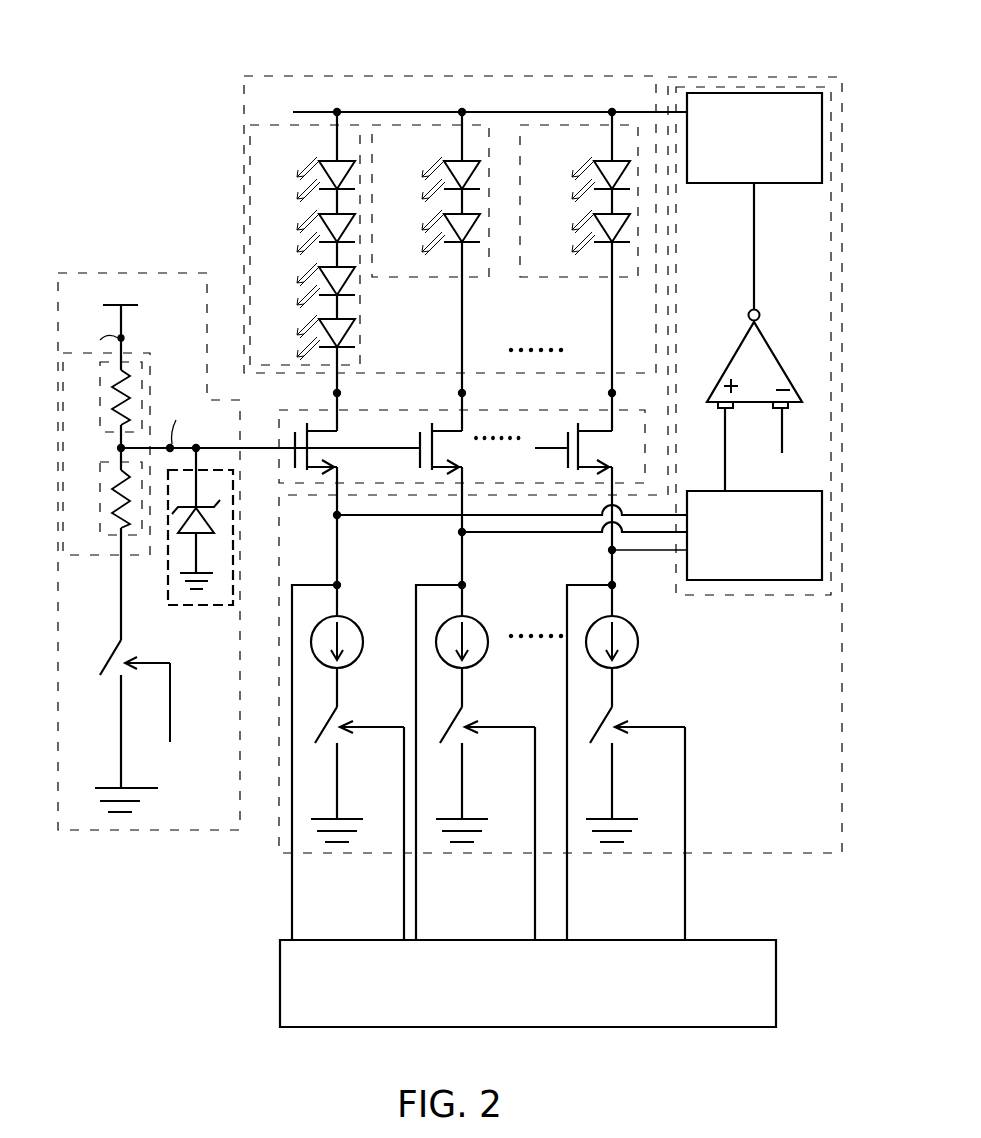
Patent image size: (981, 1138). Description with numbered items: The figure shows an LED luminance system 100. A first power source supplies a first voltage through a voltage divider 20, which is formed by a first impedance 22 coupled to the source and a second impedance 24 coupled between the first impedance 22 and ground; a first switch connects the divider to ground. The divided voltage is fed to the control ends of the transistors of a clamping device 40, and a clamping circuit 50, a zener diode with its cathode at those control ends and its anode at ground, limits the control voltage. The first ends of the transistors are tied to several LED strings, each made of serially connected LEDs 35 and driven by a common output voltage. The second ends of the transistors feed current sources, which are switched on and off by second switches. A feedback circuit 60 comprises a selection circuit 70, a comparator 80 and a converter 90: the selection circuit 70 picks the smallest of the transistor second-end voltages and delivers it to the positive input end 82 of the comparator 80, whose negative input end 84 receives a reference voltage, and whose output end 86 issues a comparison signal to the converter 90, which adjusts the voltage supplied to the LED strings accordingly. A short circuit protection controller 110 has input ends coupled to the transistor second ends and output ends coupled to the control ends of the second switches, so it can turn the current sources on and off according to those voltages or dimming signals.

The LED luminance system 100 is at (209, 72).
The voltage divider 20 is at (93, 556).
The first impedance 22 is at (100, 398).
The second impedance 24 is at (100, 496).
The clamping circuit 50 is at (197, 606).
The LED 35 is at (352, 178).
The clamping device 40 is at (280, 456).
The feedback circuit 60 is at (780, 597).
The selection circuit 70 is at (715, 597).
The comparator 80 is at (727, 362).
The positive input end 82 is at (712, 408).
The negative input end 84 is at (774, 408).
The output end 86 is at (761, 313).
The converter 90 is at (752, 92).
The short circuit protection controller 110 is at (280, 987).